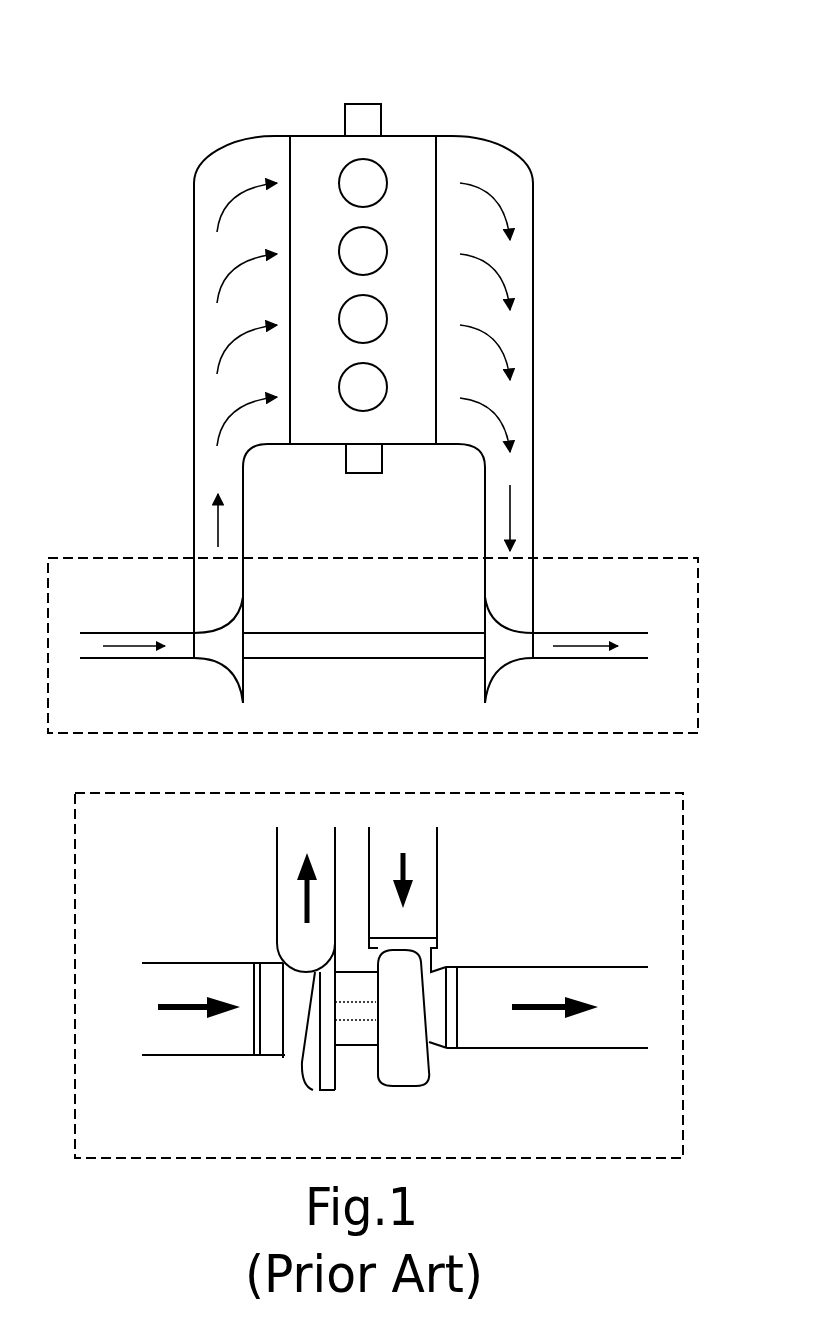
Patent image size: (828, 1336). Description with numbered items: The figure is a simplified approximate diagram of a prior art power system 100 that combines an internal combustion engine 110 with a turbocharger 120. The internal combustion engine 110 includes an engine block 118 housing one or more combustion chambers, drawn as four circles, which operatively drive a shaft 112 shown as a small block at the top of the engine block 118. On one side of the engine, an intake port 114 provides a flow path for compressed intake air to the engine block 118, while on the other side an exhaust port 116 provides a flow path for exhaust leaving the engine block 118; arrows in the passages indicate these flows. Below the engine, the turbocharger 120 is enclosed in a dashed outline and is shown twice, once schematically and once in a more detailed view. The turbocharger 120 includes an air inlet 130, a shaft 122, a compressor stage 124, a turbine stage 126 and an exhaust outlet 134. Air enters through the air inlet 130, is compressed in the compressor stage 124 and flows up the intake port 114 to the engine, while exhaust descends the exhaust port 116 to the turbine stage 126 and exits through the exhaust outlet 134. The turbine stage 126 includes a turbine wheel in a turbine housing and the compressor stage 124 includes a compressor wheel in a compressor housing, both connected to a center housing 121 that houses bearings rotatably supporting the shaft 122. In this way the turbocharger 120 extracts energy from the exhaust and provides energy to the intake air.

The power system 100 is at (527, 60).
The internal combustion engine 110 is at (327, 133).
The shaft 112 is at (363, 103).
The intake port 114 is at (194, 490).
The exhaust port 116 is at (534, 490).
The engine block 118 is at (380, 441).
The turbocharger 120 is at (592, 558).
The center housing 121 is at (362, 1047).
The shaft 122 is at (363, 658).
The compressor stage 124 is at (243, 610).
The turbine stage 126 is at (485, 610).
The air inlet 130 is at (155, 633).
The exhaust outlet 134 is at (593, 633).